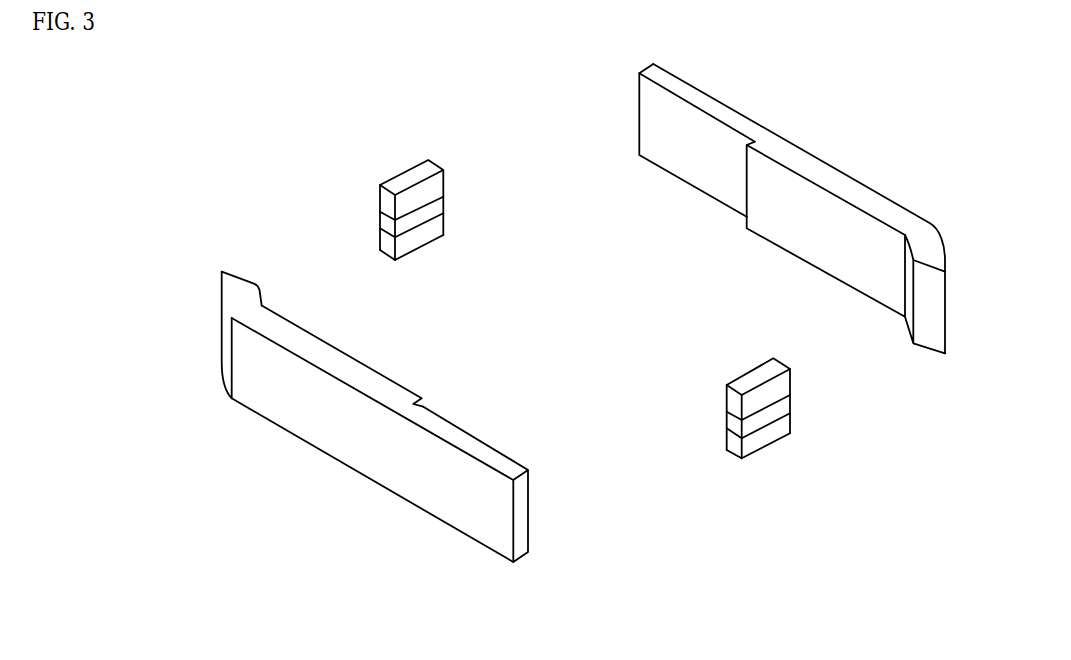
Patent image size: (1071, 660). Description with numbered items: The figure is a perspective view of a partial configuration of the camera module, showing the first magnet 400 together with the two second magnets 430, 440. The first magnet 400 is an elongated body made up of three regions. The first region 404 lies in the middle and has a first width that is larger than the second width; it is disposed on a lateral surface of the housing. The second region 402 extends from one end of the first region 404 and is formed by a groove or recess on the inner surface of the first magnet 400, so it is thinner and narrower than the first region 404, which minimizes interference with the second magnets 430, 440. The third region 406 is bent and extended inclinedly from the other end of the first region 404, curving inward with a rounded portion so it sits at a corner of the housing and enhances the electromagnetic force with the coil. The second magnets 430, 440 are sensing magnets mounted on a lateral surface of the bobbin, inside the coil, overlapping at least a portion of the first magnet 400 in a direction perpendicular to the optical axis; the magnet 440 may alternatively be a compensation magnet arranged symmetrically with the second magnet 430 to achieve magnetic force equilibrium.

The first magnet 400 is at (331, 410).
The second region 402 is at (470, 442).
The first region 404 is at (347, 368).
The third region 406 is at (237, 298).
The second magnet 430 is at (780, 430).
The second magnet 440 is at (417, 170).